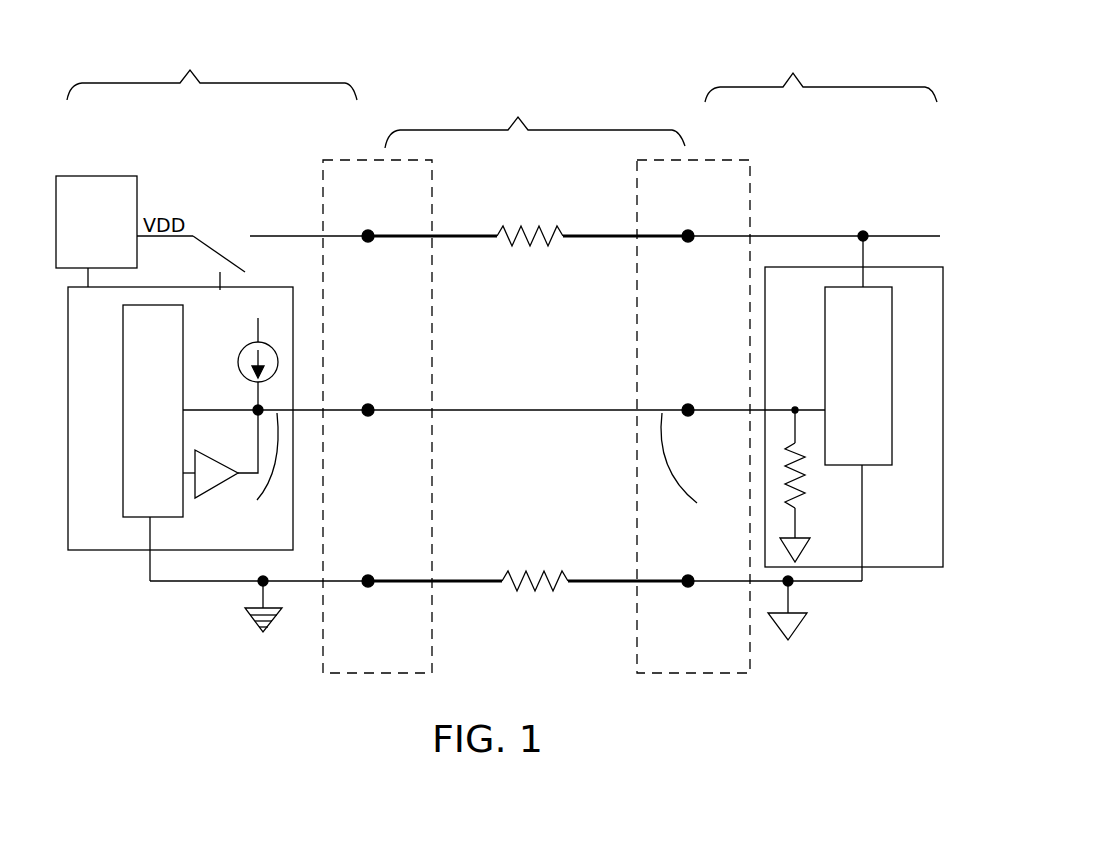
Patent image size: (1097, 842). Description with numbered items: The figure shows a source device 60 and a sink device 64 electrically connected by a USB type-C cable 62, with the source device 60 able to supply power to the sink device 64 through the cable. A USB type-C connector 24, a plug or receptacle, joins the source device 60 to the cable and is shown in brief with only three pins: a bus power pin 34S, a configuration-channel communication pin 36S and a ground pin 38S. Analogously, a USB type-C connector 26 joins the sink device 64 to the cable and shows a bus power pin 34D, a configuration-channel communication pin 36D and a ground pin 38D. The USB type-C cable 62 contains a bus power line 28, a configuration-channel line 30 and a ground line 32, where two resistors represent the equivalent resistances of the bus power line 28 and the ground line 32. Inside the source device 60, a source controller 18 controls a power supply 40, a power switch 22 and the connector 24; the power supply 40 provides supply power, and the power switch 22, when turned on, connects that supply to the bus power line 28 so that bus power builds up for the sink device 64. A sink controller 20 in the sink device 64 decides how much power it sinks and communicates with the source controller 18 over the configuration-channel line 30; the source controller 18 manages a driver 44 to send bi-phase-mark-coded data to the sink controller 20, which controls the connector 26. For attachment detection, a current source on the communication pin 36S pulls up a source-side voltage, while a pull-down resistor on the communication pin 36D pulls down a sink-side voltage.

The source controller 18 is at (86, 466).
The sink controller 20 is at (894, 512).
The power switch 22 is at (223, 232).
The USB type-C connector 24 is at (347, 157).
The USB type-C connector 26 is at (698, 160).
The VBUS power line 28 is at (615, 232).
The CC line 30 is at (610, 407).
The GND ground line 32 is at (618, 575).
The VBUS power pin 34S is at (368, 242).
The VBUS power pin 34D is at (688, 242).
The CC1/2 communication pin 36S is at (368, 416).
The CC1/2 communication pin 36D is at (688, 416).
The GND ground pin 38S is at (368, 587).
The GND ground pin 38D is at (688, 587).
The power supply 40 is at (86, 258).
The driver 44 is at (213, 488).
The source device 60 is at (270, 82).
The USB type-C cable 62 is at (567, 128).
The sink device 64 is at (827, 88).